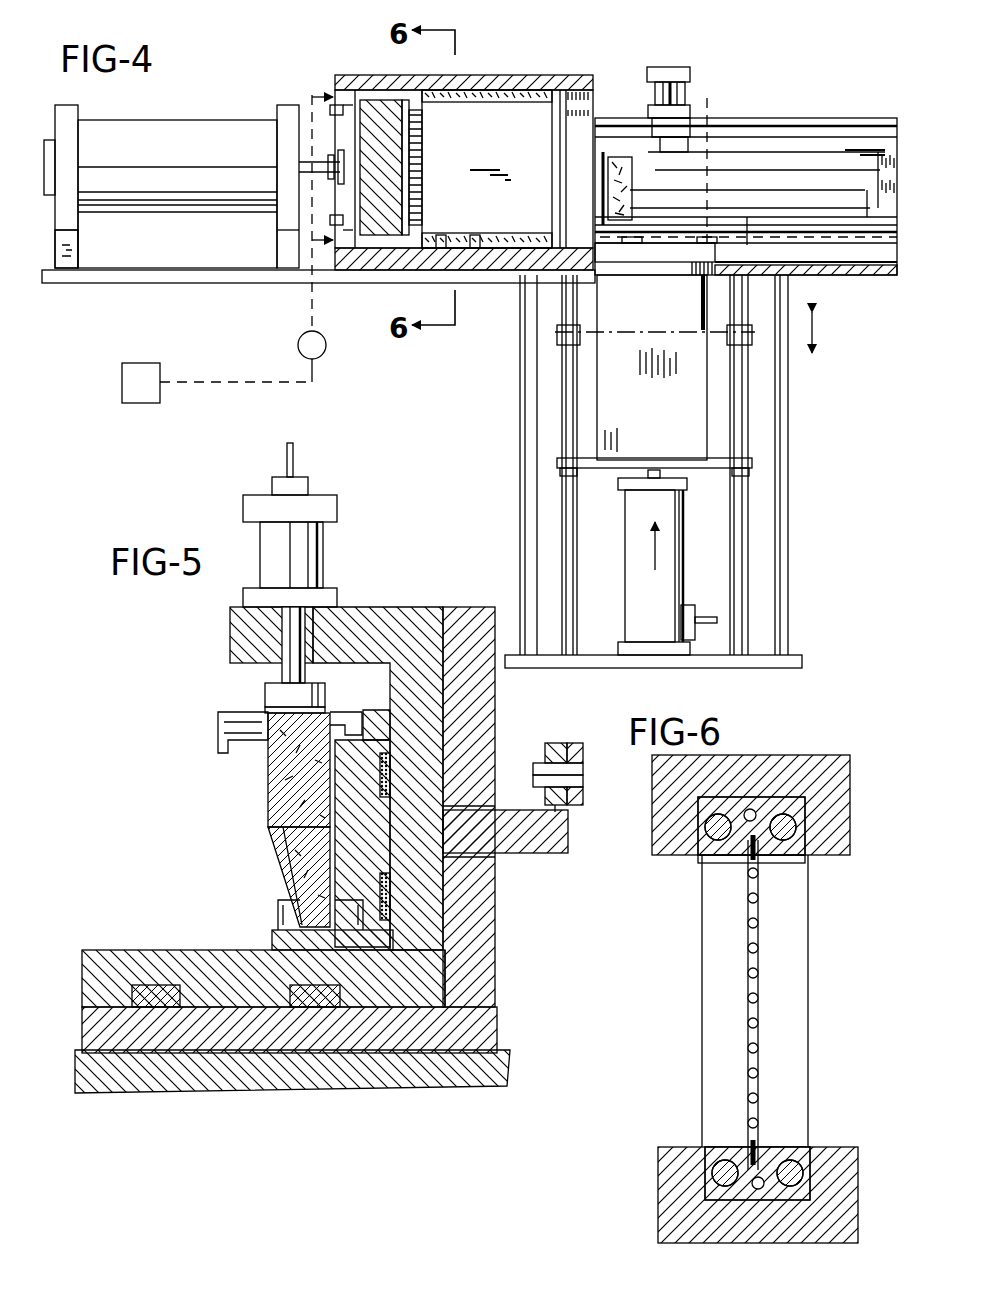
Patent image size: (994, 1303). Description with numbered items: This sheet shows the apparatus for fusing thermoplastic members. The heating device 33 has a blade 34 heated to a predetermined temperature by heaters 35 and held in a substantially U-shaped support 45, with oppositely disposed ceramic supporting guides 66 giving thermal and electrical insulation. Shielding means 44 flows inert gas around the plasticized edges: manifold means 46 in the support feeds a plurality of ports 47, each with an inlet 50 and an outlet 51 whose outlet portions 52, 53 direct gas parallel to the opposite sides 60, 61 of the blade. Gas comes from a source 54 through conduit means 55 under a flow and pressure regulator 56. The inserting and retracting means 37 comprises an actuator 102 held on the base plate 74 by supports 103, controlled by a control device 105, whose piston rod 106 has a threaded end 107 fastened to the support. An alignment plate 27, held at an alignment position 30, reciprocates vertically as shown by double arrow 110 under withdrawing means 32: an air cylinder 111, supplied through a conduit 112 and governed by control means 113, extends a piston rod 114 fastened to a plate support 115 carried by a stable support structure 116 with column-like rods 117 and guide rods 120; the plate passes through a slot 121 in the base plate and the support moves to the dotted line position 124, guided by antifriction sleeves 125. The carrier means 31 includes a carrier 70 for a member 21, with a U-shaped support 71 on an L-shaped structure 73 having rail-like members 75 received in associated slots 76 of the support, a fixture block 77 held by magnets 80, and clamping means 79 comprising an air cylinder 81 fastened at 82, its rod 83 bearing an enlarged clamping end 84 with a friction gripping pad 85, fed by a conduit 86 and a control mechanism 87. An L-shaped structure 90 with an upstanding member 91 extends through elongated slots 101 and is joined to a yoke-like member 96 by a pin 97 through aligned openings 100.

In FIG. 4, the member 21 is at (595, 162).
In FIG. 5, the member 21 is at (220, 728).
In FIG. 4, the alignment plate 27 is at (716, 300).
In FIG. 4, the alignment position 30 is at (714, 140).
In FIG. 4, the carrier means 31 is at (804, 105).
In FIG. 4, the withdrawing means 32 is at (622, 556).
In FIG. 4, the heating device 33 is at (570, 60).
In FIG. 6, the heating device 33 is at (690, 1048).
In FIG. 4, the blade 34 is at (528, 120).
In FIG. 6, the blade 34 is at (702, 975).
In FIG. 6, the heaters 35 is at (705, 827).
In FIG. 4, the inserting and retracting means 37 is at (192, 97).
In FIG. 4, the shielding means 44 is at (318, 258).
In FIG. 6, the shielding means 44 is at (745, 936).
In FIG. 4, the U-shaped support 45 is at (492, 82).
In FIG. 6, the U-shaped support 45 is at (700, 967).
In FIG. 4, the manifold means 46 is at (428, 100).
In FIG. 6, the manifold means 46 is at (750, 808).
In FIG. 4, the ports 47 is at (456, 248).
In FIG. 6, the ports 47 is at (790, 870).
In FIG. 4, the inlet 50 is at (482, 252).
In FIG. 6, the inlet 50 is at (712, 858).
In FIG. 4, the outlet 51 is at (485, 262).
In FIG. 6, the outlet 51 is at (746, 870).
In FIG. 6, the outlet portion 52 is at (752, 1070).
In FIG. 6, the outlet portion 53 is at (755, 1070).
In FIG. 4, the source of inert gas 54 is at (134, 363).
In FIG. 4, the conduit means 55 is at (211, 380).
In FIG. 4, the flow and pressure regulator 56 is at (300, 338).
In FIG. 6, the side of blade 60 is at (752, 1020).
In FIG. 6, the side of blade 61 is at (755, 1020).
In FIG. 4, the supporting guides 66 is at (375, 72).
In FIG. 6, the supporting guides 66 is at (848, 772).
In FIG. 4, the carrier 70 is at (780, 116).
In FIG. 5, the carrier 70 is at (138, 948).
In FIG. 4, the U-shaped support 71 is at (830, 118).
In FIG. 5, the U-shaped support 71 is at (445, 942).
In FIG. 5, the L-shaped structure 73 is at (497, 1008).
In FIG. 5, the base plate 74 is at (365, 1085).
In FIG. 5, the rail-like members 75 is at (300, 985).
In FIG. 5, the pads 76 is at (175, 985).
In FIG. 5, the fixture block 77 is at (376, 708).
In FIG. 4, the clamping means 79 is at (666, 62).
In FIG. 5, the clamping means 79 is at (340, 525).
In FIG. 5, the magnets 80 is at (385, 870).
In FIG. 4, the air cylinder 81 is at (652, 95).
In FIG. 5, the air cylinder 81 is at (325, 557).
In FIG. 5, the fastening location 82 is at (352, 604).
In FIG. 5, the rod 83 is at (257, 640).
In FIG. 4, the enlarged clamping end 84 is at (655, 137).
In FIG. 5, the enlarged clamping end 84 is at (267, 690).
In FIG. 4, the friction gripping pad 85 is at (690, 137).
In FIG. 5, the friction gripping pad 85 is at (267, 708).
In FIG. 5, the conduit 86 is at (295, 453).
In FIG. 5, the control mechanism 87 is at (306, 485).
In FIG. 5, the L-shaped structure 90 is at (550, 853).
In FIG. 5, the upstanding member 91 is at (570, 812).
In FIG. 5, the yoke-like member 96 is at (568, 745).
In FIG. 5, the pin 97 is at (530, 770).
In FIG. 5, the aligned openings 100 is at (560, 795).
In FIG. 5, the elongated slots 101 is at (472, 858).
In FIG. 4, the actuator 102 is at (147, 130).
In FIG. 4, the supports 103 is at (70, 248).
In FIG. 4, the control device 105 is at (58, 157).
In FIG. 4, the piston rod 106 is at (302, 165).
In FIG. 4, the threaded end 107 is at (408, 145).
In FIG. 4, the double arrow 110 is at (818, 330).
In FIG. 4, the air cylinder 111 is at (627, 518).
In FIG. 4, the conduit 112 is at (688, 605).
In FIG. 4, the control means 113 is at (712, 617).
In FIG. 4, the piston rod 114 is at (652, 470).
In FIG. 4, the plate support 115 is at (558, 466).
In FIG. 4, the support structure 116 is at (792, 546).
In FIG. 4, the column-like rods 117 is at (522, 408).
In FIG. 4, the guide rods 120 is at (568, 400).
In FIG. 4, the slot 121 is at (627, 268).
In FIG. 4, the dotted line position 124 is at (680, 320).
In FIG. 4, the antifriction sleeves 125 is at (560, 475).